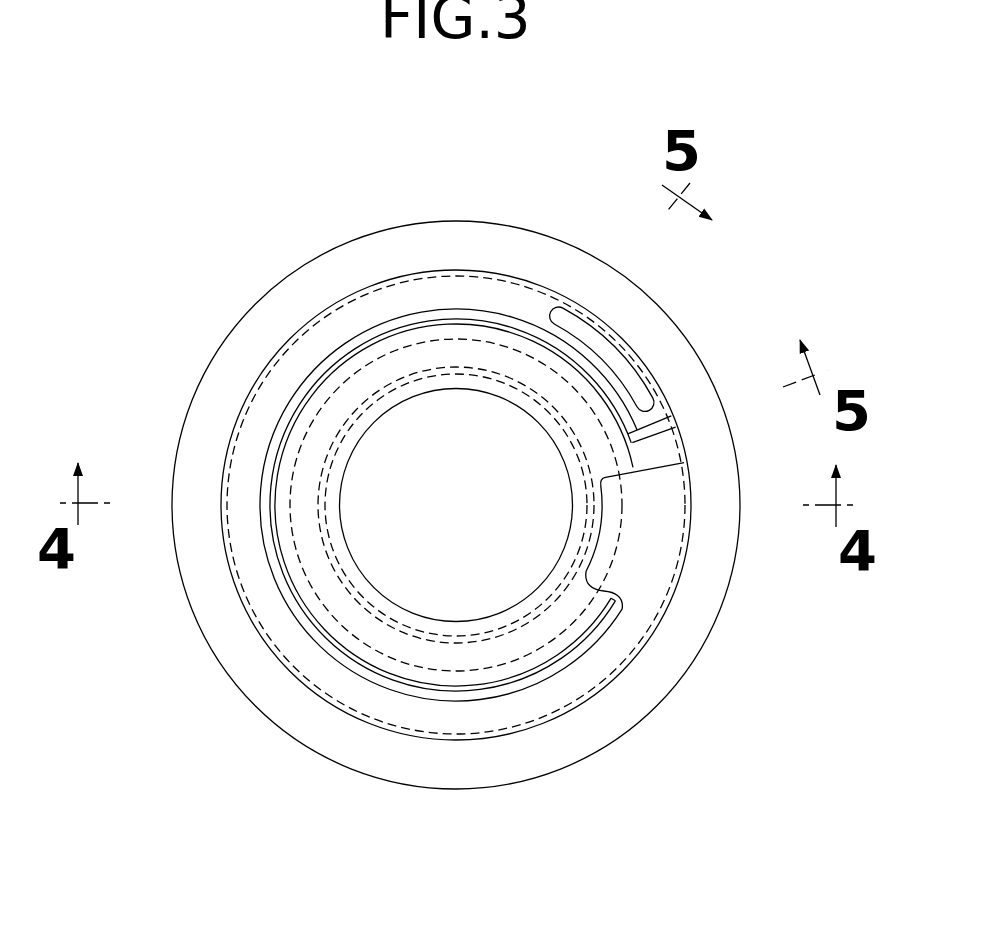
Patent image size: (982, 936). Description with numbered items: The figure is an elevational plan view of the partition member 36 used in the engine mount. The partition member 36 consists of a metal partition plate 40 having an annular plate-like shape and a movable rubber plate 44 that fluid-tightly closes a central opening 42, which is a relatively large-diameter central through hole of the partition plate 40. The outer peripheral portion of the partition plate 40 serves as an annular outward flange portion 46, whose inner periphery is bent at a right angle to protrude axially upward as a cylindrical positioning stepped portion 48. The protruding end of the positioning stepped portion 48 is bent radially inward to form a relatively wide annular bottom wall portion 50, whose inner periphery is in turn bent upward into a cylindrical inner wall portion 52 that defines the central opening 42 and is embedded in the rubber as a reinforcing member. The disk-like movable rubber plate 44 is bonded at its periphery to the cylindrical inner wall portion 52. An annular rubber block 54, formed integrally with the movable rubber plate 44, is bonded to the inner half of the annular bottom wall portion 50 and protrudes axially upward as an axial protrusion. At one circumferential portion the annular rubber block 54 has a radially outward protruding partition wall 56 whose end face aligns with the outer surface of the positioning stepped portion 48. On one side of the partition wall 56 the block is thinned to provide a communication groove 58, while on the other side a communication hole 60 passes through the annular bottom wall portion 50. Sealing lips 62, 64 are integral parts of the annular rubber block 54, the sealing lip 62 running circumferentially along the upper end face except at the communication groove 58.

The partition member 36 is at (137, 266).
The partition plate 40 is at (235, 315).
The central opening 42 is at (400, 387).
The movable rubber plate 44 is at (352, 498).
The outward flange portion 46 is at (722, 533).
The positioning stepped portion 48 is at (688, 552).
The annular bottom wall portion 50 is at (243, 548).
The cylindrical inner wall portion 52 is at (540, 618).
The annular rubber block 54 is at (268, 579).
The partition wall 56 is at (670, 449).
The communication groove 58 is at (600, 548).
The communication hole 60 is at (627, 362).
The sealing lip 62 is at (268, 485).
The sealing lip 64 is at (670, 428).